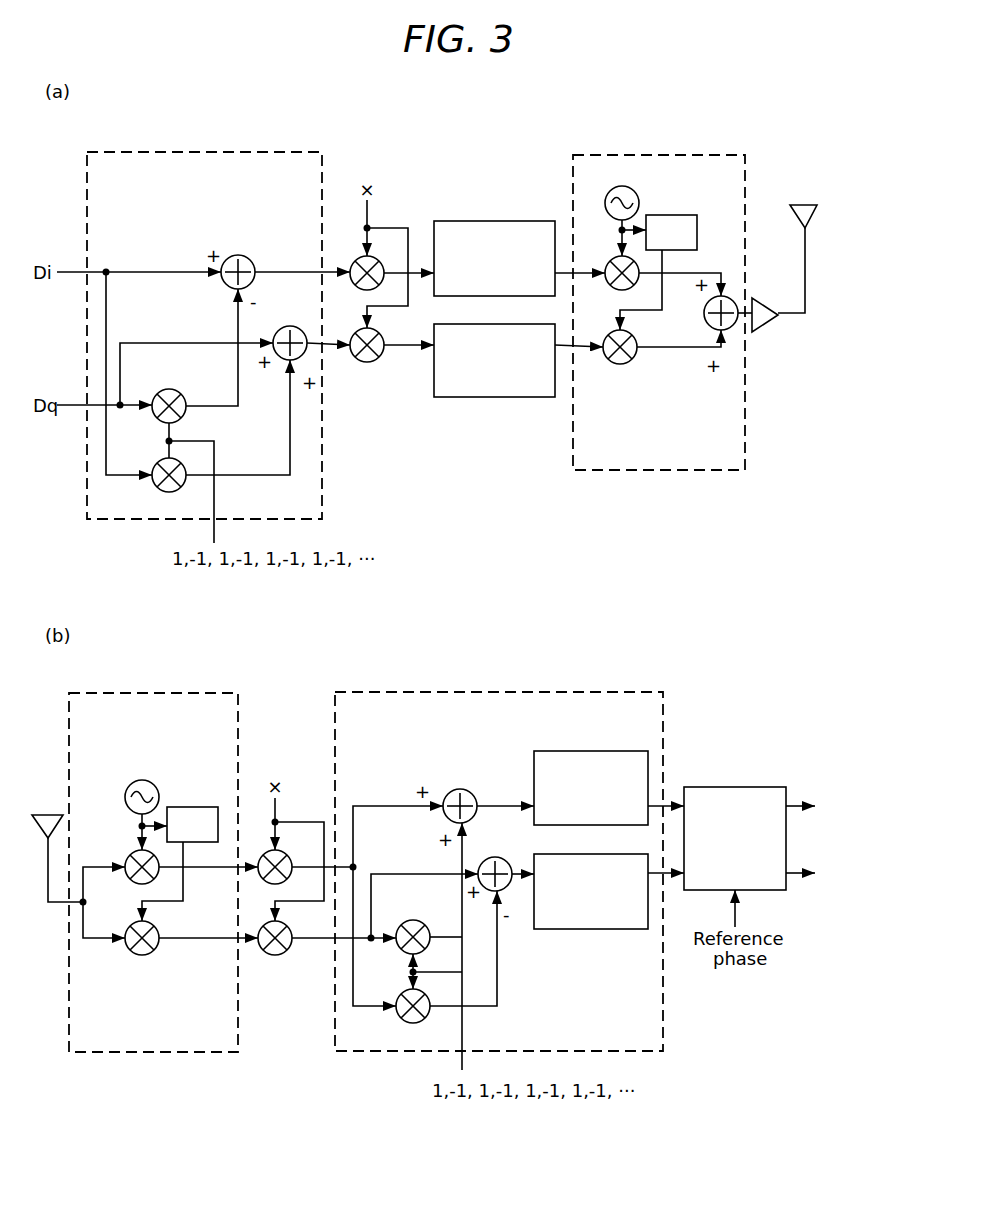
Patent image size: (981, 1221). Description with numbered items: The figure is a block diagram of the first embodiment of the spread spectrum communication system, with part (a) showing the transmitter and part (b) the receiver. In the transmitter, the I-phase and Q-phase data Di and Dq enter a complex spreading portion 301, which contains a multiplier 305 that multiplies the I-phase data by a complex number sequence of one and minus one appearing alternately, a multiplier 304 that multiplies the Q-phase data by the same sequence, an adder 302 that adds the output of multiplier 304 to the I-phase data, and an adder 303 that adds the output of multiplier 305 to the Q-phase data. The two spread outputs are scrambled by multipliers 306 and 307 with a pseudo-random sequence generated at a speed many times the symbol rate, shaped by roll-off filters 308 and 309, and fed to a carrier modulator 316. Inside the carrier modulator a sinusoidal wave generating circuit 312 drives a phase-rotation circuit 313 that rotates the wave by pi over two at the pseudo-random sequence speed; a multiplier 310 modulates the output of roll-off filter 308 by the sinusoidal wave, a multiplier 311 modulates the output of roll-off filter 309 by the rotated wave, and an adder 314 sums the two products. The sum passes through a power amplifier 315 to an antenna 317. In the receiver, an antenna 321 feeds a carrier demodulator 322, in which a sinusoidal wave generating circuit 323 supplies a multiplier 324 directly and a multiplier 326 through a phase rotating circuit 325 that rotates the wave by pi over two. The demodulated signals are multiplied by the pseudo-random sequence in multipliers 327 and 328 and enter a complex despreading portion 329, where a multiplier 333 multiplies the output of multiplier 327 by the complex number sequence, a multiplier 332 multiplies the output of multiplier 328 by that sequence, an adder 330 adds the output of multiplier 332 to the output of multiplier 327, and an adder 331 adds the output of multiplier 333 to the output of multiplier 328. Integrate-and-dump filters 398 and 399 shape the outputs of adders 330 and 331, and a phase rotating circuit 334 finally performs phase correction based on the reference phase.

The complex spreading portion 301 is at (218, 152).
The adder 302 is at (248, 255).
The adder 303 is at (297, 327).
The multiplier 304 is at (172, 386).
The multiplier 305 is at (160, 491).
The multiplier 306 is at (358, 257).
The multiplier 307 is at (374, 363).
The roll-off filter 308 is at (457, 220).
The roll-off filter 309 is at (485, 400).
The multiplier 310 is at (608, 260).
The multiplier 311 is at (610, 363).
The sinusoidal wave generating circuit 312 is at (626, 187).
The phase-rotation circuit 313 is at (678, 213).
The adder 314 is at (733, 288).
The power amplifier 315 is at (773, 306).
The carrier modulator 316 is at (673, 153).
The antenna 317 is at (790, 211).
The antenna 321 is at (55, 813).
The carrier demodulator 322 is at (184, 692).
The sinusoidal wave generating circuit 323 is at (130, 787).
The multiplier 324 is at (130, 850).
The phase rotating circuit 325 is at (195, 805).
The multiplier 326 is at (127, 953).
The multiplier 327 is at (290, 856).
The multiplier 328 is at (282, 957).
The complex despreading portion 329 is at (415, 691).
The adder 330 is at (470, 790).
The adder 331 is at (500, 857).
The multiplier 332 is at (415, 920).
The multiplier 333 is at (405, 1025).
The phase rotating circuit 334 is at (738, 785).
The integrate-and-dump filter 398 is at (560, 748).
The integrate-and-dump filter 399 is at (588, 929).